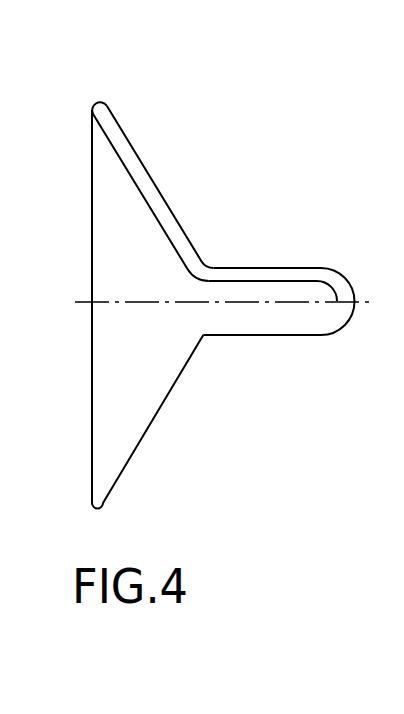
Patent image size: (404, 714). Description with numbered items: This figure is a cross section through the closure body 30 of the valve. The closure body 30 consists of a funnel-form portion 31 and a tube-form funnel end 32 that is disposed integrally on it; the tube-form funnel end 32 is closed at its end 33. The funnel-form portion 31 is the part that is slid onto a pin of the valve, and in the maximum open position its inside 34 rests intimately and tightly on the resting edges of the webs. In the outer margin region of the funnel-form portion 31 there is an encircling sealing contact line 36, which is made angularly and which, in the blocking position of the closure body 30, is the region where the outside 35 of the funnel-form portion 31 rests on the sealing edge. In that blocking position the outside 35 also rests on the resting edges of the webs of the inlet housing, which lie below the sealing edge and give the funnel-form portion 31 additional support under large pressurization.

The closure body 30 is at (239, 289).
The funnel-form portion 31 is at (155, 183).
The tube-form funnel end 32 is at (285, 267).
The end 33 is at (352, 288).
The inside of the funnel-form portion 34 is at (148, 206).
The outside of the funnel-form portion 35 is at (143, 437).
The sealing contact line 36 is at (114, 116).